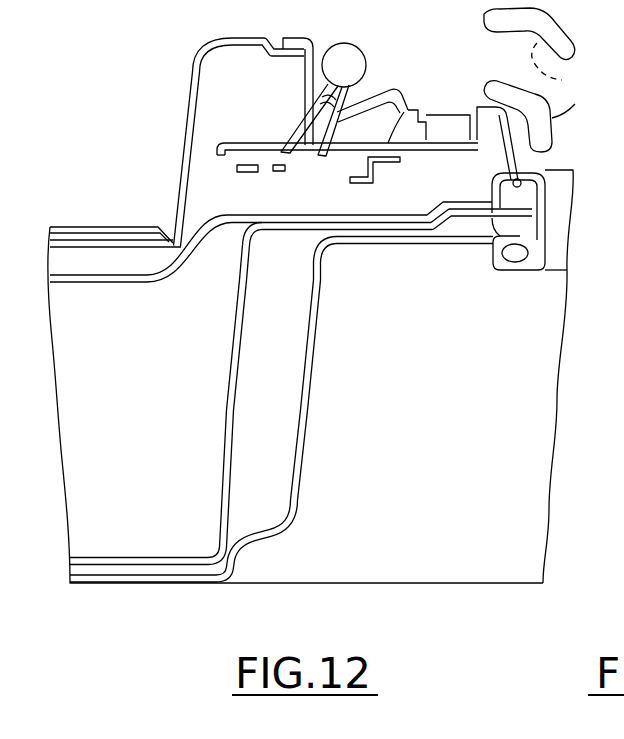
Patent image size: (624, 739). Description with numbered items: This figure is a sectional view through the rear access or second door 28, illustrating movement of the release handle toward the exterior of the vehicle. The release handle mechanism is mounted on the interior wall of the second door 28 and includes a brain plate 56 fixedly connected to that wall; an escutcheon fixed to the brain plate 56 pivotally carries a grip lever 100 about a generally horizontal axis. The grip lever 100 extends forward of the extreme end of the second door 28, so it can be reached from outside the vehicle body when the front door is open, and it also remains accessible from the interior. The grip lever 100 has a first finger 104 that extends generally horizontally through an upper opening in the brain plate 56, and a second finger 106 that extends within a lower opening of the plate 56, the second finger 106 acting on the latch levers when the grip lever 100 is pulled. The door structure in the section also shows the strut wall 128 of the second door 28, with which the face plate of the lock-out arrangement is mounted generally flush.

The second door 28 is at (128, 587).
The brain plate 56 is at (405, 113).
The grip lever 100 is at (556, 76).
The first finger 104 is at (319, 157).
The second finger 106 is at (278, 150).
The strut wall 128 is at (303, 449).